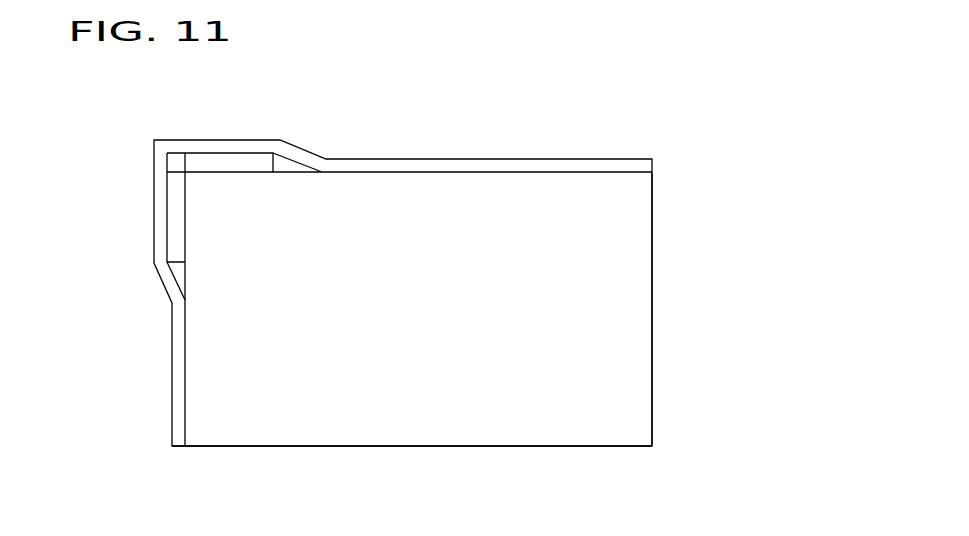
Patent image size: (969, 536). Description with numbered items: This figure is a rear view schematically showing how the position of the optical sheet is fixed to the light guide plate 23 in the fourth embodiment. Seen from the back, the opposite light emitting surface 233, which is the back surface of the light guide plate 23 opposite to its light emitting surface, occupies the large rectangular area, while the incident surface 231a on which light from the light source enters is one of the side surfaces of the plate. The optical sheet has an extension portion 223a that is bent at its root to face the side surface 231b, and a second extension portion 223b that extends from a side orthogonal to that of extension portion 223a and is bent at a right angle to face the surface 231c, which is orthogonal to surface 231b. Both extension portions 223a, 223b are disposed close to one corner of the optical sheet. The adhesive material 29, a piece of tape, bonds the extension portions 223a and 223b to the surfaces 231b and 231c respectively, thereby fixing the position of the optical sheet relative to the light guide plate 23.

The light guide plate 23 is at (632, 274).
The incident surface 231a is at (653, 367).
The surface 231b is at (294, 171).
The surface 231c is at (178, 277).
The extension portion 223a is at (228, 167).
The extension portion 223b is at (178, 217).
The adhesive material 29 is at (178, 386).
The opposite light emitting surface 233 is at (357, 435).